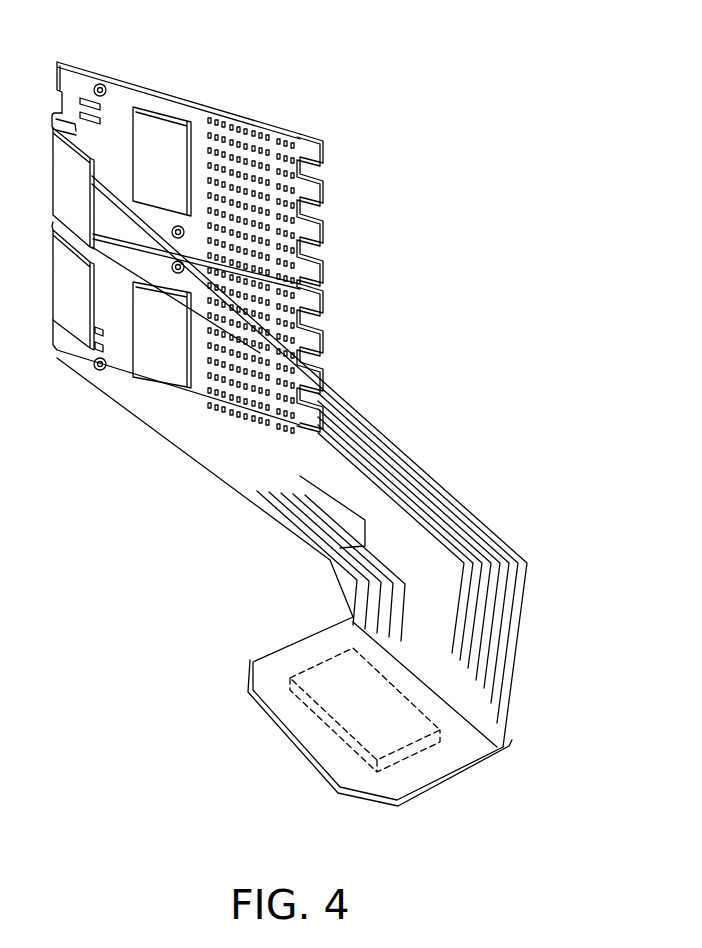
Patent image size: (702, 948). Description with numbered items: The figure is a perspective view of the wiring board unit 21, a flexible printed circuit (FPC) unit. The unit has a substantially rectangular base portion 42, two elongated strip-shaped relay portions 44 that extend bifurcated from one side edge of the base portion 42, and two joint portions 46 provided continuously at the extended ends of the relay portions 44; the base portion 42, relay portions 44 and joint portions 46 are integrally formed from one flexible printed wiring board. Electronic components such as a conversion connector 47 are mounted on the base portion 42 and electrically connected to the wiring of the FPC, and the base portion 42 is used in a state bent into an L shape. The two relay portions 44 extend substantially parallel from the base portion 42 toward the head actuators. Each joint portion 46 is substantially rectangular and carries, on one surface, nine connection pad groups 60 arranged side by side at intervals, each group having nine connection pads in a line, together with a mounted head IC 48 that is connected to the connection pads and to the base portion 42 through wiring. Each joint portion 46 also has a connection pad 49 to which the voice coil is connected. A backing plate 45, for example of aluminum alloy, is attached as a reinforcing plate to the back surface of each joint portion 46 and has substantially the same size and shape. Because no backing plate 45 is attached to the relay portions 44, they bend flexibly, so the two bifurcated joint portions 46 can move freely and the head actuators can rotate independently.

The wiring board unit 21 is at (455, 424).
The base portion 42 is at (475, 745).
The relay portion 44 is at (370, 438).
The backing plate 45 is at (220, 104).
The joint portion 46 is at (125, 96).
The conversion connector 47 is at (415, 757).
The head IC 48 is at (162, 135).
The connection pad 49 is at (84, 106).
The connection pad group 60 is at (273, 168).